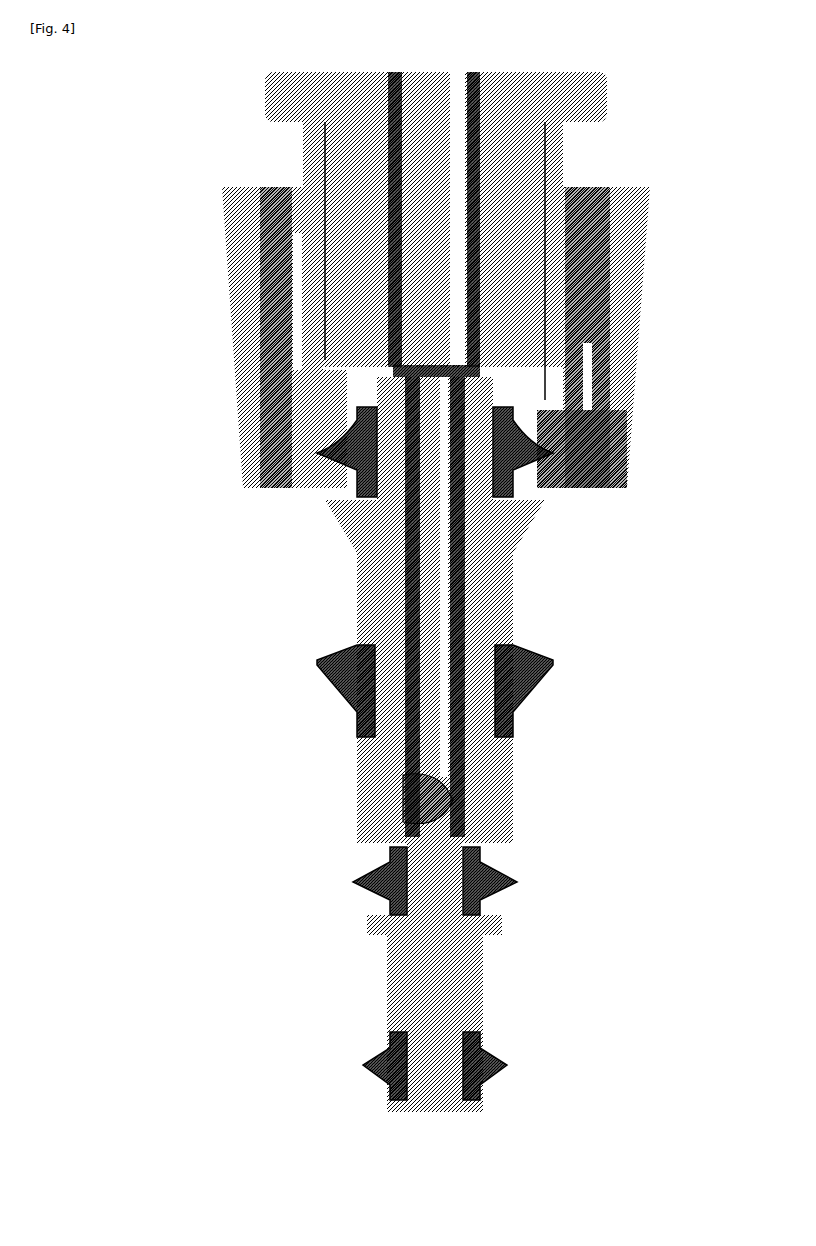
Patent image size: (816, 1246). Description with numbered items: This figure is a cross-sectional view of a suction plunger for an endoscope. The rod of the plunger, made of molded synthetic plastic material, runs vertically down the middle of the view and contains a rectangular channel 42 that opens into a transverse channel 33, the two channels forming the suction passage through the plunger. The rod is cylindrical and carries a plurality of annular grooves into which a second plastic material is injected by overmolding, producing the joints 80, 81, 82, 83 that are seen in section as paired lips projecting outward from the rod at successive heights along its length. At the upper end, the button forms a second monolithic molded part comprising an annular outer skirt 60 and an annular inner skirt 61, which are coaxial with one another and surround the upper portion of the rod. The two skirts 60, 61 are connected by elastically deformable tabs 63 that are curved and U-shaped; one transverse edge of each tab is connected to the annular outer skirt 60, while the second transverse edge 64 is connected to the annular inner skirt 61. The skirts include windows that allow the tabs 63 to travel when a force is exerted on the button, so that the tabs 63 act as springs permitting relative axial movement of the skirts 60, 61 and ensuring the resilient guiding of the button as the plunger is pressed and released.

The transverse channel 33 is at (400, 808).
The rectangular channel 42 is at (440, 517).
The annular outer skirt 60 is at (245, 285).
The annular inner skirt 61 is at (553, 190).
The elastically deformable tab 63 is at (585, 367).
The second transverse edge 64 is at (585, 412).
The joint 80 is at (335, 455).
The joint 81 is at (325, 655).
The joint 82 is at (370, 880).
The joint 83 is at (370, 1060).